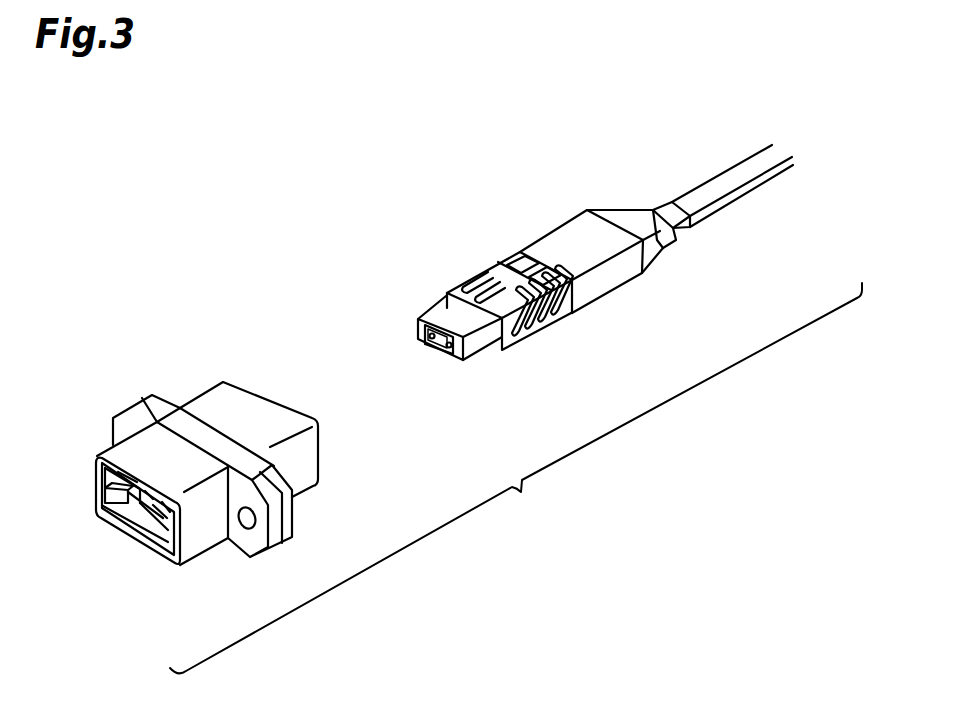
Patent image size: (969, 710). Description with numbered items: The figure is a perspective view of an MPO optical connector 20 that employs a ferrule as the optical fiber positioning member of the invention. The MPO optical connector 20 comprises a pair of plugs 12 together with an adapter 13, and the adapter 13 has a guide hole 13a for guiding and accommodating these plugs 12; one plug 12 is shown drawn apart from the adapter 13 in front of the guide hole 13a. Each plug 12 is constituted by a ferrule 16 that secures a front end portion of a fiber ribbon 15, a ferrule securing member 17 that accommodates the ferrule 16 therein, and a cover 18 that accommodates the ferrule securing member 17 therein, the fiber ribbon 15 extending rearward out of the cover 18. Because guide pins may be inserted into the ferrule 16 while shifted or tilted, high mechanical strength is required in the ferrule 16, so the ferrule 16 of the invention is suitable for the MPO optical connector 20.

The MPO optical connector 20 is at (415, 154).
The plug 12 is at (565, 193).
The adapter 13 is at (228, 388).
The guide hole 13a is at (163, 518).
The fiber ribbon 15 is at (722, 178).
The ferrule 16 is at (420, 338).
The ferrule securing member 17 is at (465, 328).
The cover 18 is at (612, 283).